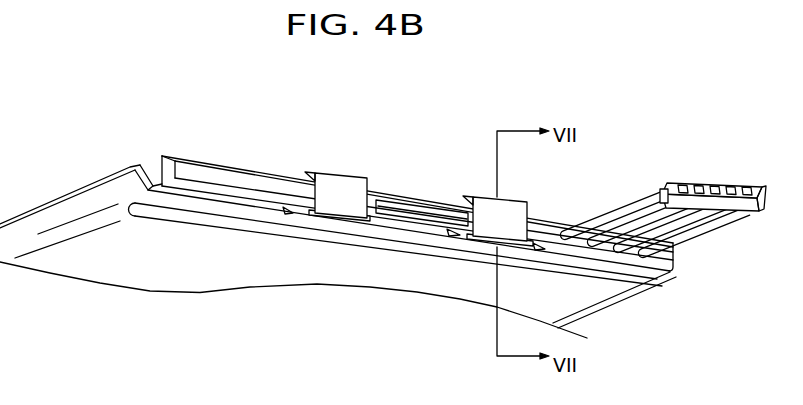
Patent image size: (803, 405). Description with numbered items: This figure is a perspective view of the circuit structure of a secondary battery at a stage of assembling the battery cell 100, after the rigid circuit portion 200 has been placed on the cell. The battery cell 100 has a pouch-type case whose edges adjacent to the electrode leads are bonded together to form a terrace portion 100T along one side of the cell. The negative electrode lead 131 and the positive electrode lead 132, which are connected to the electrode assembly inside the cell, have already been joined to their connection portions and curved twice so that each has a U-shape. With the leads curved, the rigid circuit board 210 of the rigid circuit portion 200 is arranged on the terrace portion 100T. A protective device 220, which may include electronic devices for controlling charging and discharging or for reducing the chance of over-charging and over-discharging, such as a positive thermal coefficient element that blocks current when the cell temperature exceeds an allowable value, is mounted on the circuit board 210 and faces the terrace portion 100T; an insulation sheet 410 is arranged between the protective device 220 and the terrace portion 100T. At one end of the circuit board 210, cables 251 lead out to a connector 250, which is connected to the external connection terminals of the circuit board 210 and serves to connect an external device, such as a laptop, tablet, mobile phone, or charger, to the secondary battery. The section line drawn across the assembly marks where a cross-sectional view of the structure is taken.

The battery cell 100 is at (338, 208).
The terrace portion 100T is at (193, 197).
The insulation sheet 410 is at (146, 158).
The rigid circuit portion 200 is at (410, 169).
The rigid circuit board 210 is at (253, 172).
The protective device 220 is at (413, 207).
The negative electrode lead 131 is at (482, 200).
The positive electrode lead 132 is at (338, 180).
The connector 250 is at (720, 185).
The cables 251 is at (625, 220).